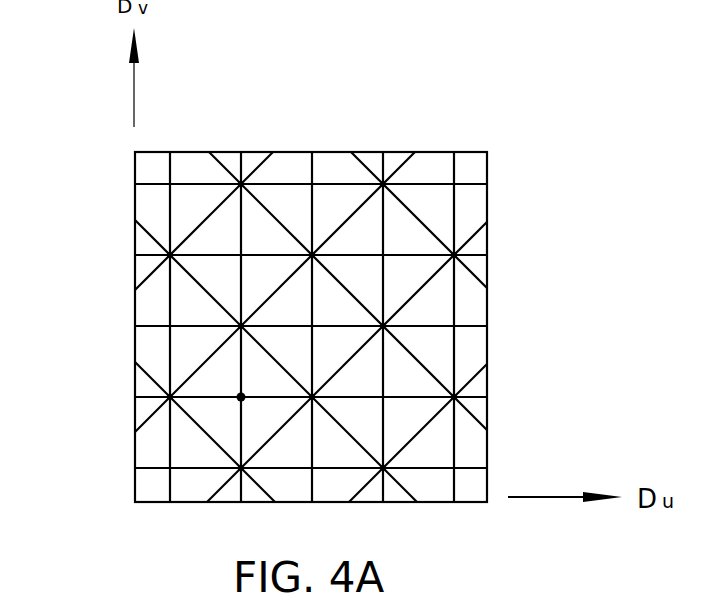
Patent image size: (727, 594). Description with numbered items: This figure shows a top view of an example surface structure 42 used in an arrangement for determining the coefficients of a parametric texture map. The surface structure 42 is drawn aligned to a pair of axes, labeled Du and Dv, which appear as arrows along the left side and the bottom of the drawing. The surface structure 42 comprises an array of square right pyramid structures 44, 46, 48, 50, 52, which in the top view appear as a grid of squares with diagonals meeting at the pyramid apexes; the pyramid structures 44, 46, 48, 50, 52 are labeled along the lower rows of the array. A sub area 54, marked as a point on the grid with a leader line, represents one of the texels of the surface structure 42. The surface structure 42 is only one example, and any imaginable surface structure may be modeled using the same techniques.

The surface structure 42 is at (375, 281).
The square right pyramid structure 44 is at (169, 327).
The square right pyramid structure 46 is at (242, 327).
The square right pyramid structure 48 is at (313, 327).
The square right pyramid structure 50 is at (383, 327).
The square right pyramid structure 52 is at (454, 327).
The sub area 54 is at (238, 396).